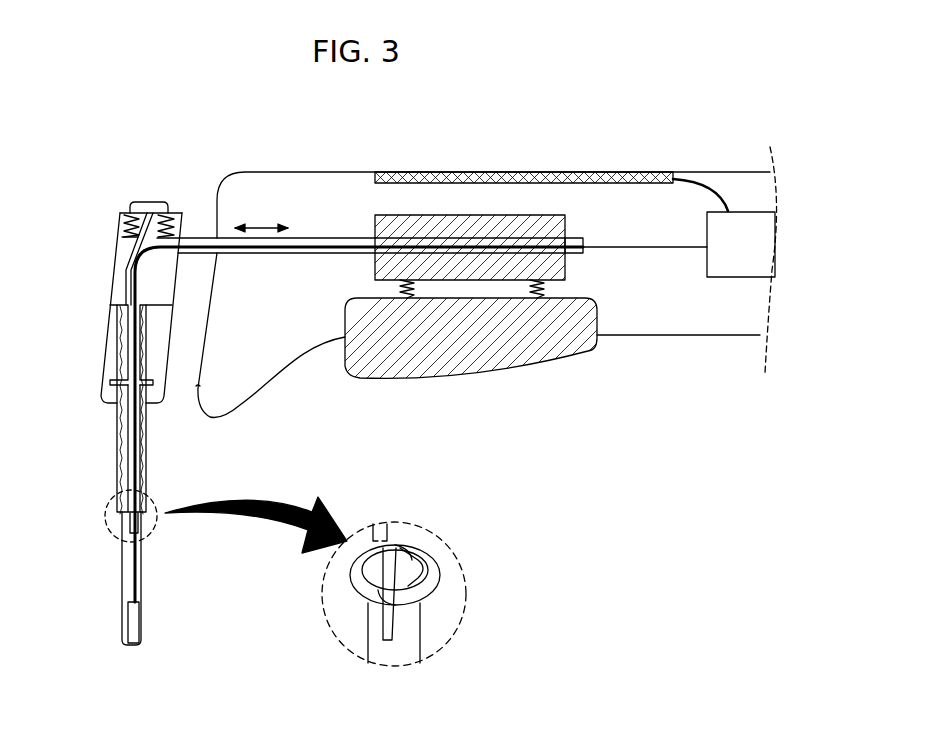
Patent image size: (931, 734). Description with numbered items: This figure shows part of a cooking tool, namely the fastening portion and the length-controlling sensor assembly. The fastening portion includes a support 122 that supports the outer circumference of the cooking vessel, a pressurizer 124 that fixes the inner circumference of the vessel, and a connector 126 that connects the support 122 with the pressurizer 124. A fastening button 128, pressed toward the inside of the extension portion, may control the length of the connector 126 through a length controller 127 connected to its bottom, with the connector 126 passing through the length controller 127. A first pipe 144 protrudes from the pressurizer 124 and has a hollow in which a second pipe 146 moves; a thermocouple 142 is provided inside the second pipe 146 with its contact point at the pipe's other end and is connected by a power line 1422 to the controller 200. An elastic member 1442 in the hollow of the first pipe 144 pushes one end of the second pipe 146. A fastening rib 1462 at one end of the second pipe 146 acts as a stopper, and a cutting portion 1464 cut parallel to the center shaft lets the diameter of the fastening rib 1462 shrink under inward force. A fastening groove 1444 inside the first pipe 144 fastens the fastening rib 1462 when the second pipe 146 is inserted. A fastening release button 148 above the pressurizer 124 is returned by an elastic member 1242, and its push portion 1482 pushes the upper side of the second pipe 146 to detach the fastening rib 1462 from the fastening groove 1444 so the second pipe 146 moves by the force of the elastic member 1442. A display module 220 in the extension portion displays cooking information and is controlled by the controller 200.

The support 122 is at (196, 388).
The pressurizer 124 is at (110, 300).
The elastic member 1242 is at (123, 228).
The connector 126 is at (237, 243).
The length controller 127 is at (497, 228).
The fastening button 128 is at (424, 378).
The thermocouple 142 is at (130, 620).
The power line 1422 is at (298, 243).
The first pipe 144 is at (118, 460).
The elastic member 1442 is at (147, 458).
The fastening groove 1444 is at (110, 383).
The second pipe 146 is at (122, 568).
The fastening rib 1462 is at (118, 515).
The cutting portion 1464 is at (393, 635).
The fastening release button 148 is at (150, 203).
The push portion 1482 is at (125, 266).
The controller 200 is at (727, 258).
The display module 220 is at (418, 178).